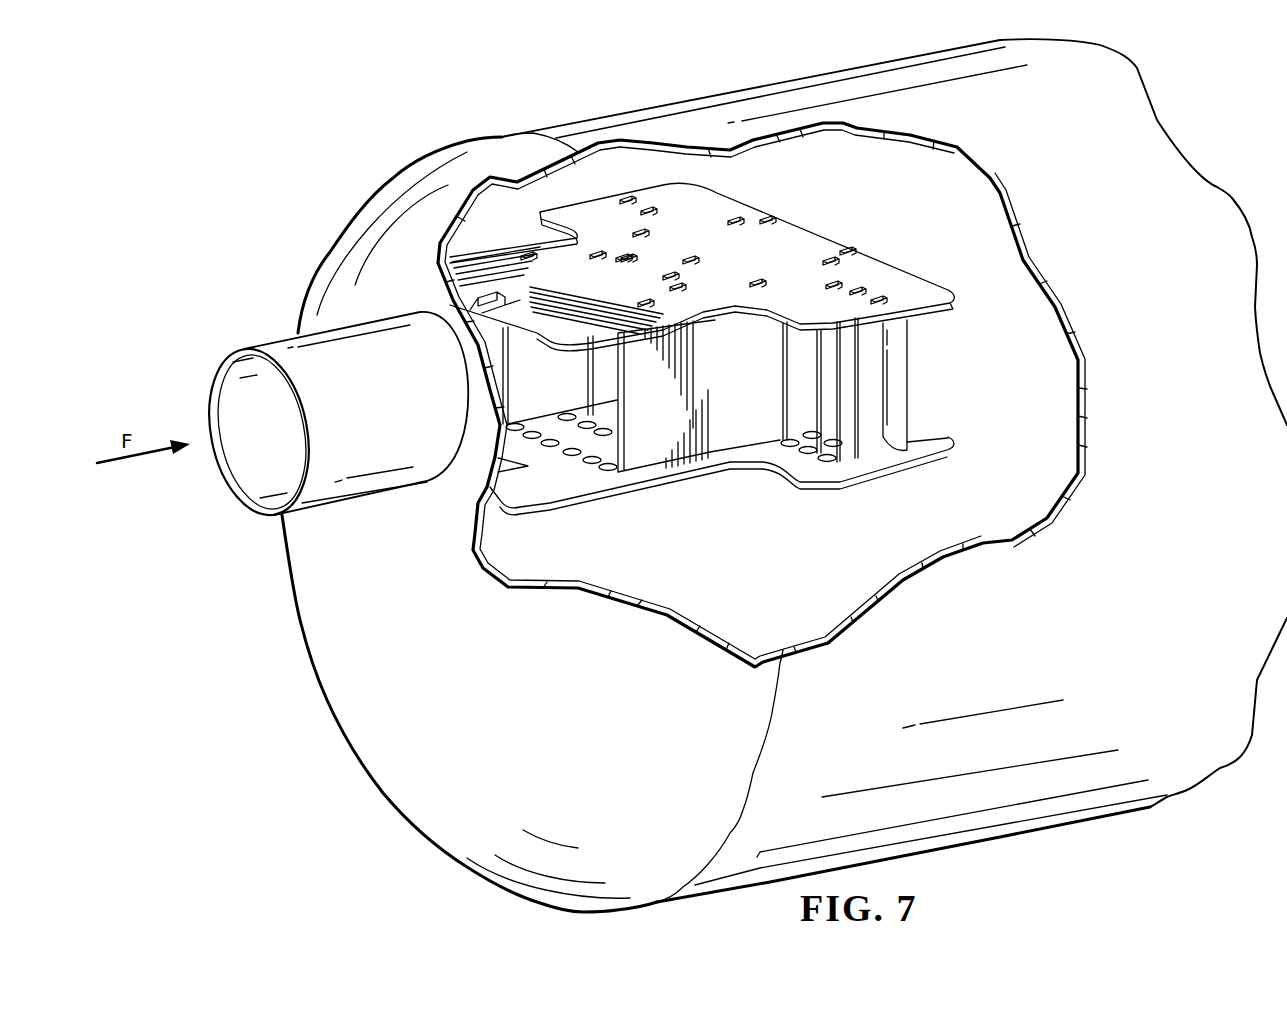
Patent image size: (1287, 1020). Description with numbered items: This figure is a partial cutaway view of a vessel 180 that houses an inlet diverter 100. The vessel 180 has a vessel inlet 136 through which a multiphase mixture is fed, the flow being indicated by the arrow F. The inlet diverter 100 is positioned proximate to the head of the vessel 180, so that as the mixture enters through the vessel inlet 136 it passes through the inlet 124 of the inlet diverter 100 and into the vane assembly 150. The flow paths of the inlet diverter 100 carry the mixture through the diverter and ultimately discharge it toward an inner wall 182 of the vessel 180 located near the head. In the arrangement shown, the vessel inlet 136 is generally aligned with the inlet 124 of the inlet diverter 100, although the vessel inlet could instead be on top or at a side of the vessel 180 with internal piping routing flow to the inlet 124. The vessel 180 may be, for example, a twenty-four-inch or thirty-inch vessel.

The inlet diverter 100 is at (644, 168).
The inlet 124 is at (558, 472).
The vessel inlet 136 is at (252, 478).
The vane assembly 150 is at (703, 502).
The vessel 180 is at (805, 76).
The inner wall 182 is at (503, 535).